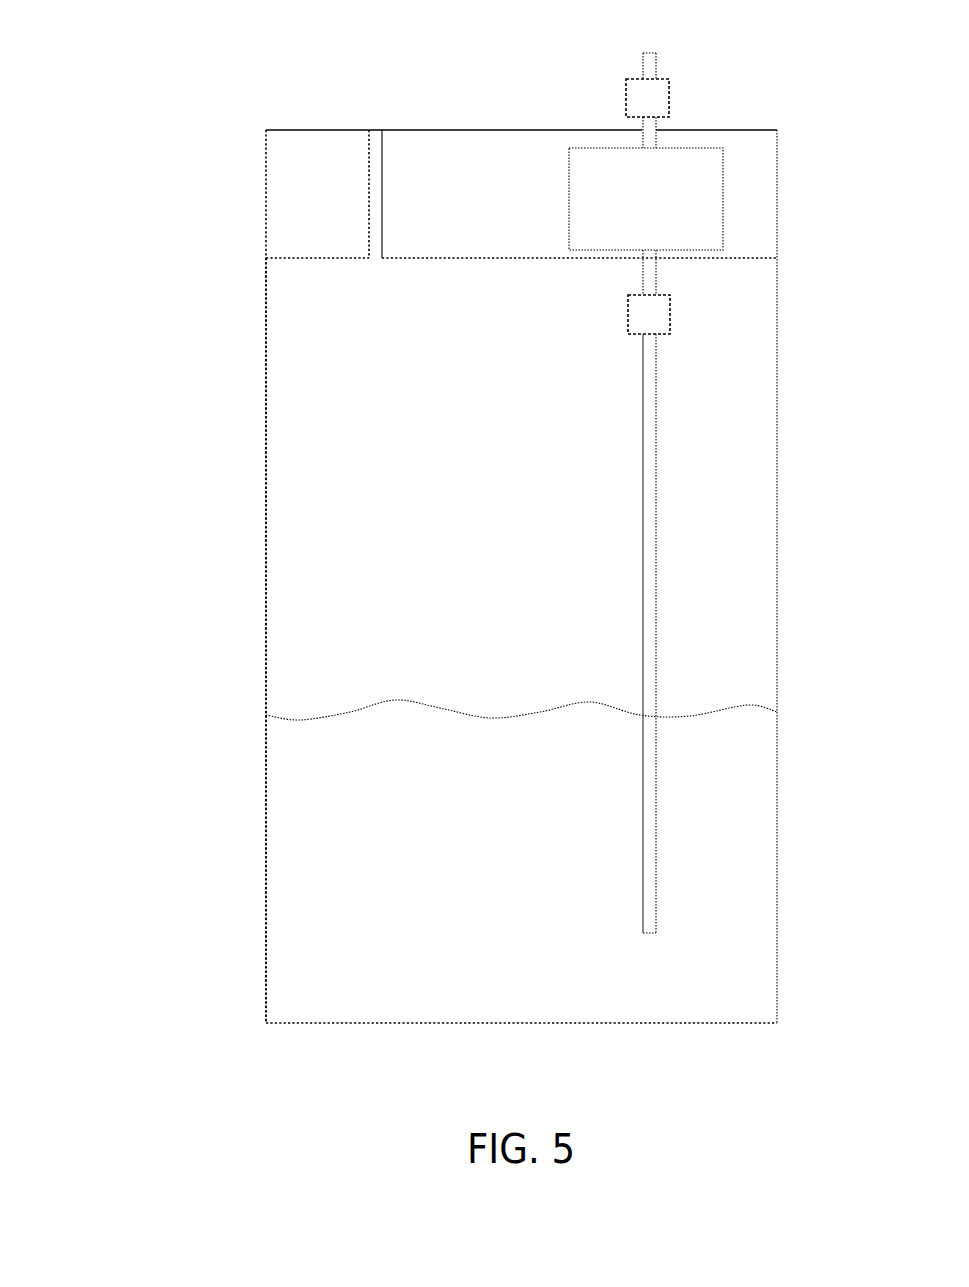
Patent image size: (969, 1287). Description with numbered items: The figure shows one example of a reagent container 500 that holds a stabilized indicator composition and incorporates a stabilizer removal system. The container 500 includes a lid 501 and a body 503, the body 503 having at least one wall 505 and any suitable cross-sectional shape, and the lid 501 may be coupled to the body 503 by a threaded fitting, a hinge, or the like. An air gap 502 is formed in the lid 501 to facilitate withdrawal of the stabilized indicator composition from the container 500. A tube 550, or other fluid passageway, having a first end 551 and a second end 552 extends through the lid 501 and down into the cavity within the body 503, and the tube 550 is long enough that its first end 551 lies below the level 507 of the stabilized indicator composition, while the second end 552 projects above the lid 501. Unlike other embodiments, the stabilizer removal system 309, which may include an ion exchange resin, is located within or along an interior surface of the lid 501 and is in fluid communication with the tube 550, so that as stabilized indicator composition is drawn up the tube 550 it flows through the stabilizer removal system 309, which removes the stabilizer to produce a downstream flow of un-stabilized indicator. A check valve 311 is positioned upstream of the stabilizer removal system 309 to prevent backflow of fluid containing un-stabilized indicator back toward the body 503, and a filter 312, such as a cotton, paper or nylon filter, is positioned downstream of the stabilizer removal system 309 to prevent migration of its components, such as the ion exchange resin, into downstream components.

The container 500 is at (46, 44).
The lid 501 is at (275, 225).
The air gap 502 is at (377, 142).
The body 503 is at (322, 382).
The wall 505 is at (266, 585).
The level 507 is at (303, 720).
The stabilizer removal system 309 is at (646, 199).
The check valve 311 is at (649, 314).
The filter 312 is at (647, 98).
The tube 550 is at (656, 622).
The first end 551 is at (656, 933).
The second end 552 is at (642, 53).